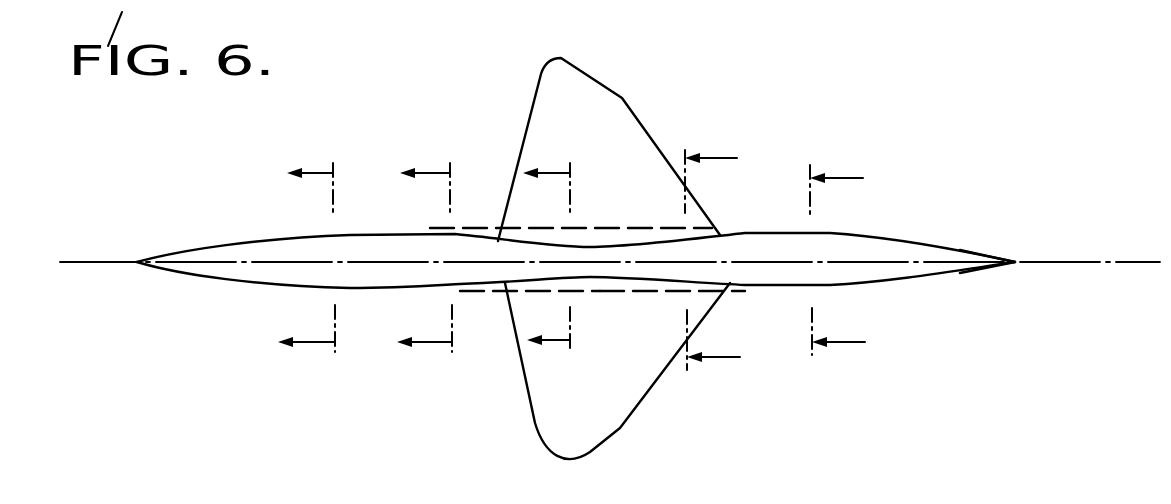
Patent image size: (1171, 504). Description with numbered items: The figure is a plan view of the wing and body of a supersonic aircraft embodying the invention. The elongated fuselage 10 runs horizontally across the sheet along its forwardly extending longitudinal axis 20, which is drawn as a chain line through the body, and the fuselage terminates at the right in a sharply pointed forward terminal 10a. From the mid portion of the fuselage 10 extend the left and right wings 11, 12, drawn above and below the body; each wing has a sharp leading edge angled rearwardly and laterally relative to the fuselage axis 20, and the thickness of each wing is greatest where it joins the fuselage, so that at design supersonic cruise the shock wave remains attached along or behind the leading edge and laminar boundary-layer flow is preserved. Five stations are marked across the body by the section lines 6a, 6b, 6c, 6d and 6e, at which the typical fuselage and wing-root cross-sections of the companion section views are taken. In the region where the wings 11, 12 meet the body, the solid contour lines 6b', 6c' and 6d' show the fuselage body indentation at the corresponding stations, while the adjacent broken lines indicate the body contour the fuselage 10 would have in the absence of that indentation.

The fuselage 10 is at (905, 230).
The forward terminal 10a is at (1015, 262).
The left wing 11 is at (582, 93).
The right wing 12 is at (540, 398).
The fuselage longitudinal axis 20 is at (923, 263).
The section line 6a is at (279, 260).
The section line 6b is at (417, 260).
The section line 6c is at (572, 262).
The section line 6d is at (720, 265).
The section line 6e is at (854, 263).
The fuselage indentation line 6b' is at (571, 178).
The fuselage indentation line 6c' is at (571, 378).
The fuselage indentation line 6d' is at (716, 364).